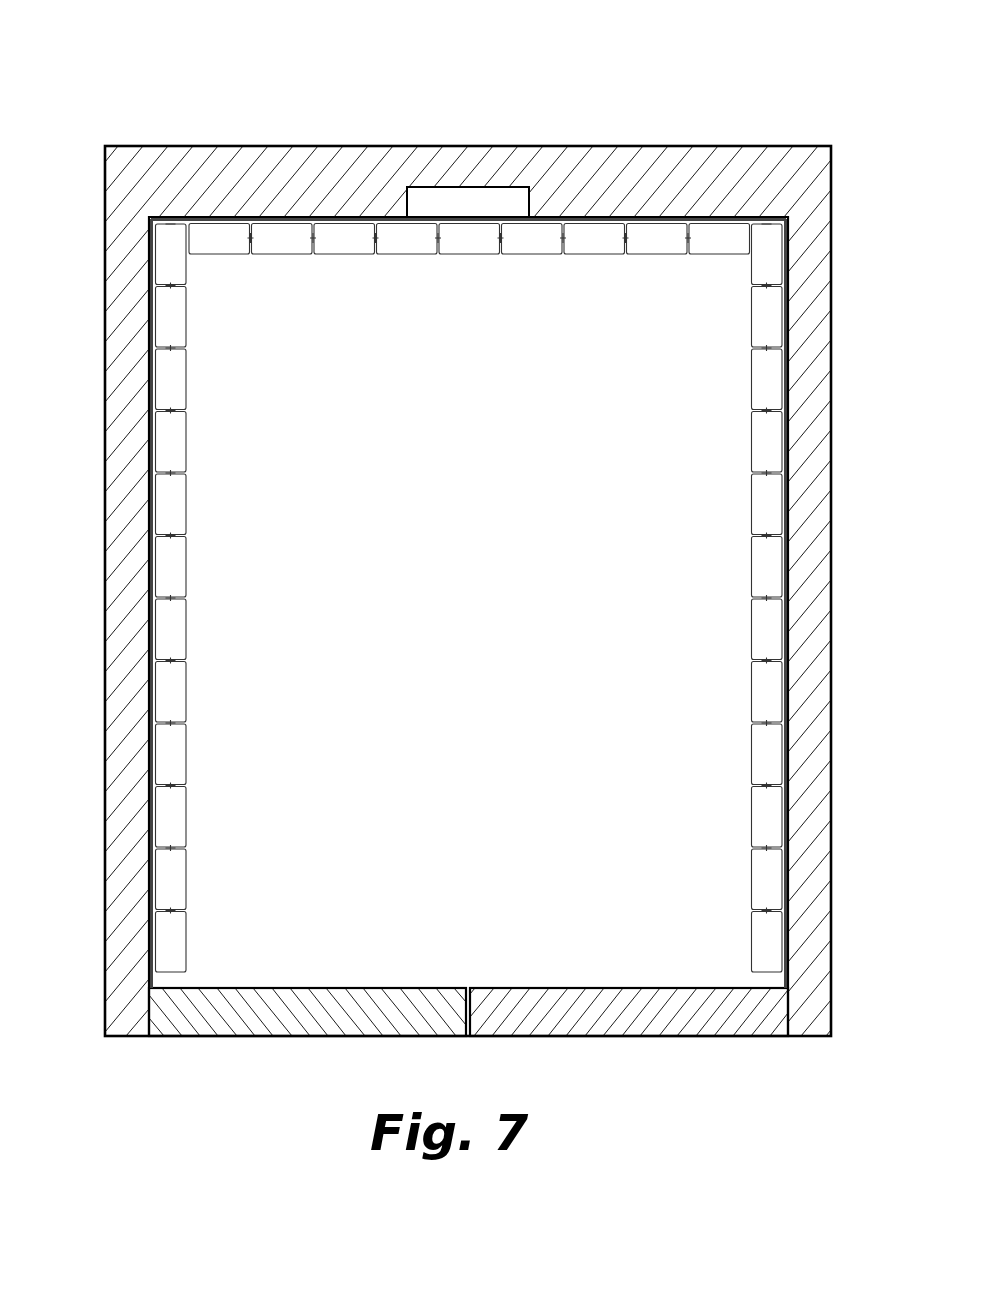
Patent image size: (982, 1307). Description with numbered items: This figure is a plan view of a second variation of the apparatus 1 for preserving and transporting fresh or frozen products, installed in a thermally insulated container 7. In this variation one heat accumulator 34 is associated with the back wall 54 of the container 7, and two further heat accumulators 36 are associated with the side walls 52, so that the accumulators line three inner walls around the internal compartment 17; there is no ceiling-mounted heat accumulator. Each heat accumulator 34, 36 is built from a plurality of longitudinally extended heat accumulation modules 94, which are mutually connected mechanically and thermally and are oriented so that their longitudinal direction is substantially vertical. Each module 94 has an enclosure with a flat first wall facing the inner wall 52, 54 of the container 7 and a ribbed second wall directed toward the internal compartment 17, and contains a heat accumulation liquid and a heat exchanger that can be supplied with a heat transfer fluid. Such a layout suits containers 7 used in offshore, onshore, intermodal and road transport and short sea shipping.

The apparatus 1 is at (142, 104).
The container 7 is at (739, 138).
The internal compartment 17 is at (333, 920).
The heat accumulator 34 is at (487, 268).
The heat accumulator 36 is at (202, 522).
The side wall 52 is at (150, 580).
The back wall 54 is at (612, 224).
The heat accumulation module 94 is at (469, 598).